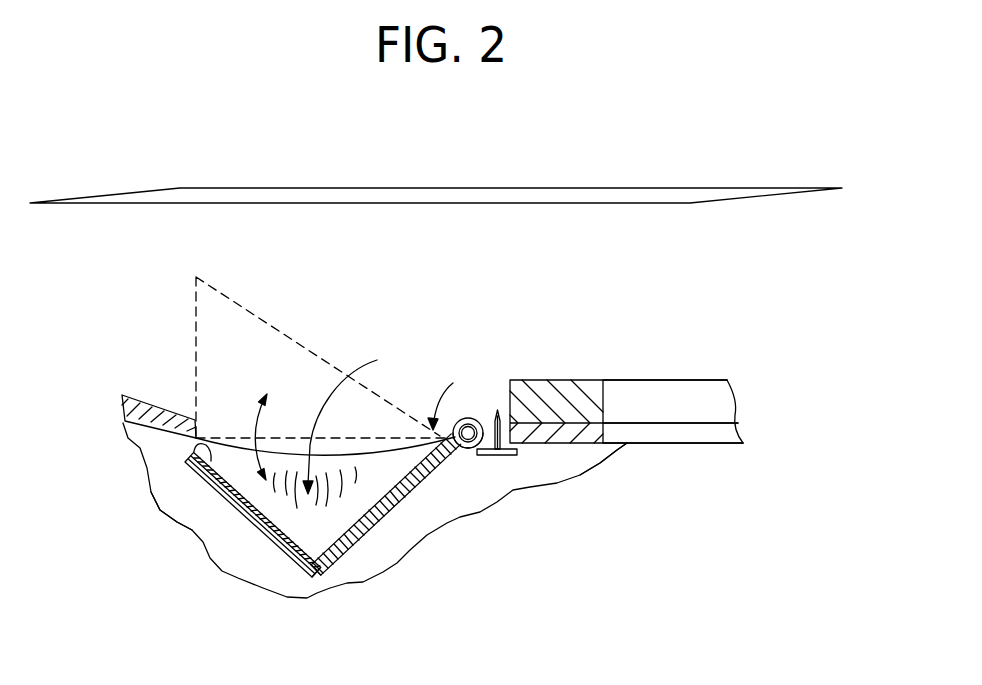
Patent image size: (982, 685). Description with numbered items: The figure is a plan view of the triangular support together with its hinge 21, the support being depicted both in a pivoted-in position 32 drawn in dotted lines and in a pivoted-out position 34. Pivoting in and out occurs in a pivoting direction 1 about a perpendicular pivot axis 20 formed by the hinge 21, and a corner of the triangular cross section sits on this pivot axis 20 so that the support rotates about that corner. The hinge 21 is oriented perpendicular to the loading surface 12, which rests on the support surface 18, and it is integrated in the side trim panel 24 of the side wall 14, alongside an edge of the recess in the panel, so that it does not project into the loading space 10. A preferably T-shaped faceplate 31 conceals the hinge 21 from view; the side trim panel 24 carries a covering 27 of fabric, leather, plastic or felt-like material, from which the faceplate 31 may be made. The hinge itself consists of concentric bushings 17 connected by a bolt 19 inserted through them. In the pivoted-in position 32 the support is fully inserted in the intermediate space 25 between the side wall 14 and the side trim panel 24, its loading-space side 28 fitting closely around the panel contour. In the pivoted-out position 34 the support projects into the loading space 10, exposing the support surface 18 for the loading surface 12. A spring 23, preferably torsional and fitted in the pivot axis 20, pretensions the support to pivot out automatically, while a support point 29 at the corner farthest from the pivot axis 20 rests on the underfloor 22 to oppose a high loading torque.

The pivoting direction 1 is at (252, 424).
The loading space 10 is at (721, 527).
The loading surface 12 is at (260, 535).
The side wall 14 is at (635, 190).
The bushings 17 is at (472, 420).
The support surface 18 is at (318, 514).
The bolt 19 is at (470, 452).
The pivot axis 20 is at (462, 418).
The hinge 21 is at (465, 451).
The underfloor 22 is at (553, 470).
The spring 23 is at (402, 450).
The side trim panel 24 is at (143, 429).
The intermediate space 25 is at (594, 359).
The covering 27 is at (700, 433).
The side of the support on the loading space side 28 is at (365, 538).
The support point 29 is at (311, 580).
The faceplate 31 is at (508, 456).
The pivoted-in position 32 is at (207, 316).
The pivoted-out position 34 is at (225, 498).